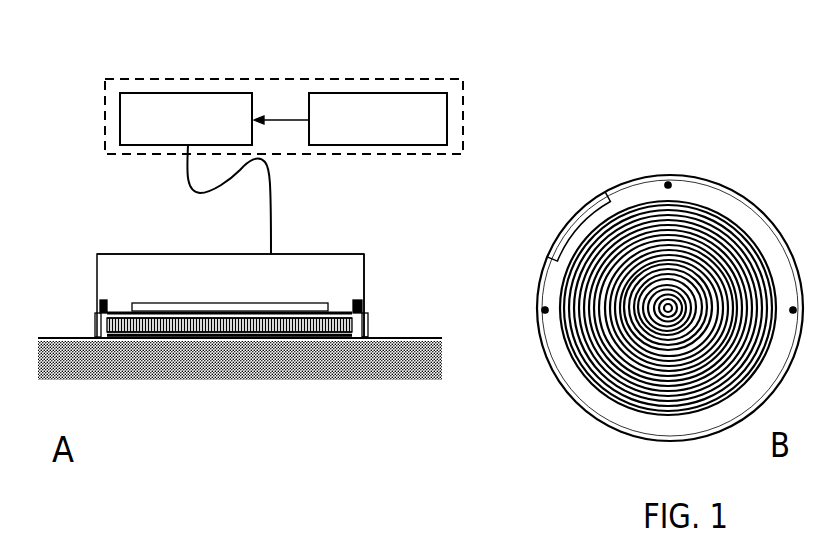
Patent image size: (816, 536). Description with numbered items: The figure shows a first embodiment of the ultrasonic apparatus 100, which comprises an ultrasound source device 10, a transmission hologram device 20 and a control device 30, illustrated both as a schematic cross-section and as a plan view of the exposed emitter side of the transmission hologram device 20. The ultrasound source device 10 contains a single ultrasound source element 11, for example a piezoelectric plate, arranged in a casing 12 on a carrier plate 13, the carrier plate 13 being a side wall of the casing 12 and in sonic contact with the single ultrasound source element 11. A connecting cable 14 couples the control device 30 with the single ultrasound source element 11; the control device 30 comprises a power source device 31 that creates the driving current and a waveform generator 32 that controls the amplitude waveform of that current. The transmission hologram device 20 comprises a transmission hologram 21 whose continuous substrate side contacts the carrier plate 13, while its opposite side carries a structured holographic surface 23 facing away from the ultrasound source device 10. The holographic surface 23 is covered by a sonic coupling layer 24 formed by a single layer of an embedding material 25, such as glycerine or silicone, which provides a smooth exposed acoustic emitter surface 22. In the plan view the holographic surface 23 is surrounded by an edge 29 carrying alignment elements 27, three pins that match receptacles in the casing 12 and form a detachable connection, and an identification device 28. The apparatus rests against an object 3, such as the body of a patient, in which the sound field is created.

The ultrasonic apparatus 100 is at (430, 61).
The control device 30 is at (113, 92).
The power source device 31 is at (186, 119).
The waveform generator 32 is at (378, 119).
The connecting cable 14 is at (272, 210).
The ultrasound source device 10 is at (102, 272).
The casing 12 is at (195, 252).
The carrier plate 13 is at (340, 310).
The single ultrasound source element 11 is at (165, 303).
The transmission hologram device 20 is at (95, 330).
The transmission hologram 21 is at (183, 337).
The acoustic emitter surface 22 is at (270, 336).
The holographic surface 23 is at (195, 328).
The sonic coupling layer 24 is at (380, 333).
The embedding material 25 is at (312, 336).
The alignment elements 27 is at (97, 305).
The identification device 28 is at (566, 222).
The edge 29 is at (653, 427).
The object 3 is at (105, 364).